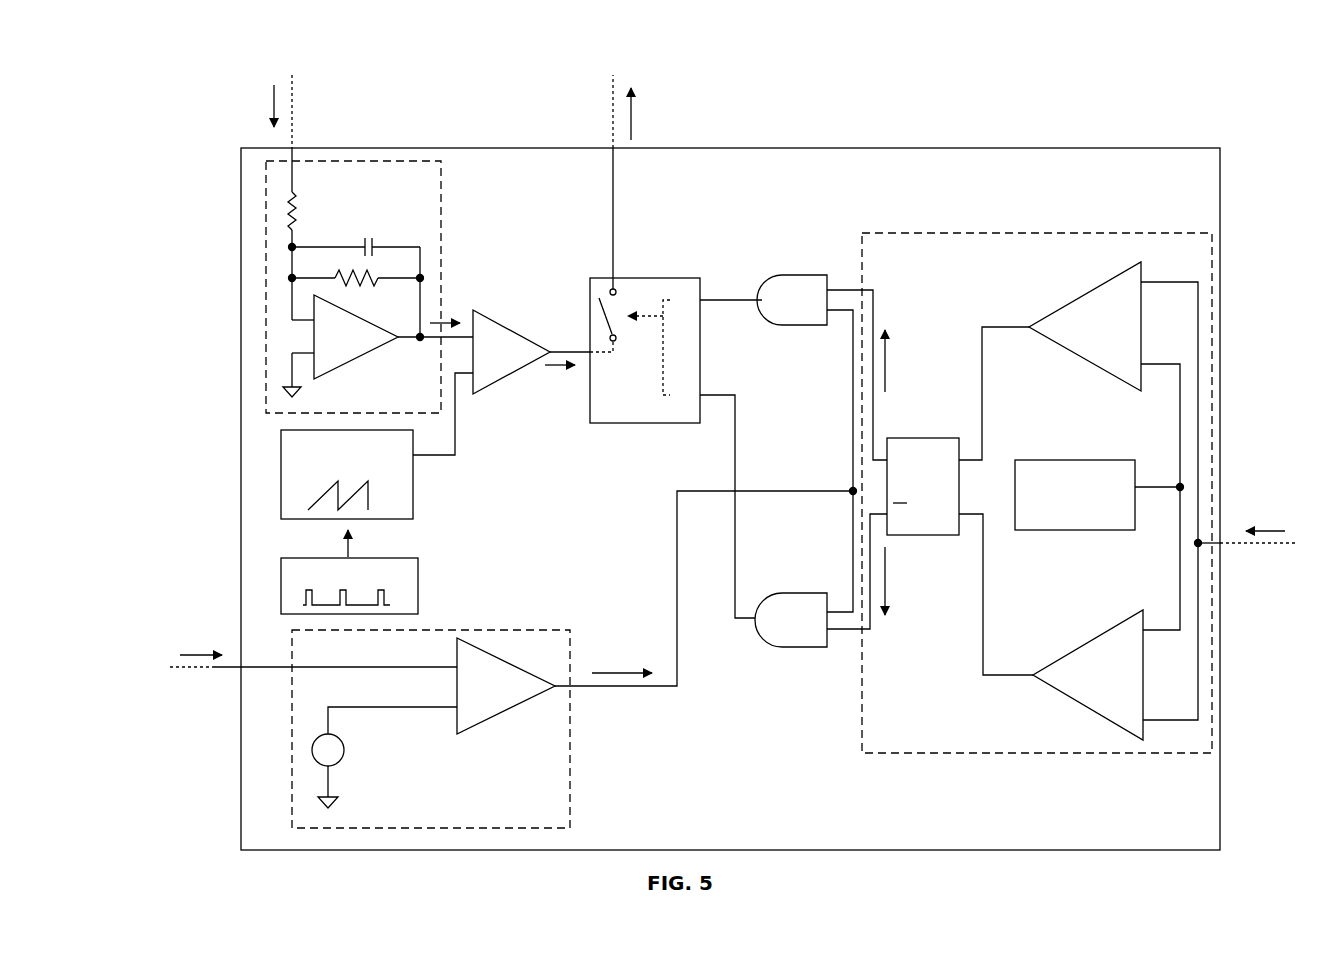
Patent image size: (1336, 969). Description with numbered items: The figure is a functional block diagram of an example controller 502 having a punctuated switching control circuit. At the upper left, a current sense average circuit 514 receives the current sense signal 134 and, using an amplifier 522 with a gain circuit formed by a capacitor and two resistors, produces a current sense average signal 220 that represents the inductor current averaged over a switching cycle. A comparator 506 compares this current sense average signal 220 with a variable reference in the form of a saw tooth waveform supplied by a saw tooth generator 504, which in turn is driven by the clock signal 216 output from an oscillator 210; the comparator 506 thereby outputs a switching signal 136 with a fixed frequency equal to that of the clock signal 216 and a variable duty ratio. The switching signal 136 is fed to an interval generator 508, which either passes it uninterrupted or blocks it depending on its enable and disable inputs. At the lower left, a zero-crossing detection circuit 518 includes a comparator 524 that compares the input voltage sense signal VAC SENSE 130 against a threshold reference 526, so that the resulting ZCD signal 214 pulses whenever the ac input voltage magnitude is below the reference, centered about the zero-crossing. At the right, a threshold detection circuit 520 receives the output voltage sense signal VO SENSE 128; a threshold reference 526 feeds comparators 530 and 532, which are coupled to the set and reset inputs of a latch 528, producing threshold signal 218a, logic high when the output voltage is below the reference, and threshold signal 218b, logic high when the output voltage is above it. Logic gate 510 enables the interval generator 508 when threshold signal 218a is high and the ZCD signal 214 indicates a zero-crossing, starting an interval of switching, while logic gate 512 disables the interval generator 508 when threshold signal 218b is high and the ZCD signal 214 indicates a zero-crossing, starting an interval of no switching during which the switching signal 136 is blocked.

The controller 502 is at (1118, 143).
The current sense signal 134 is at (266, 106).
The current sense average circuit 514 is at (404, 280).
The amplifier 522 is at (362, 364).
The current sense average signal 220 is at (450, 312).
The comparator 506 is at (511, 321).
The switching signal 136 is at (558, 375).
The interval generator 508 is at (660, 268).
The logic gate 510 is at (797, 272).
The logic gate 512 is at (782, 588).
The latch 528 is at (925, 435).
The threshold signal 218a is at (897, 357).
The threshold signal 218b is at (890, 580).
The threshold detection circuit 520 is at (1030, 760).
The comparator 530 is at (1048, 300).
The comparator 532 is at (1060, 632).
The threshold reference 526 is at (1028, 452).
The output voltage sense signal VO SENSE 128 is at (1265, 518).
The saw tooth generator 504 is at (418, 497).
The clock signal 216 is at (355, 545).
The oscillator 210 is at (428, 585).
The input voltage sense signal VAC SENSE 130 is at (198, 648).
The zero-crossing detection circuit 518 is at (538, 624).
The comparator 524 is at (518, 722).
The ZCD signal 214 is at (628, 668).